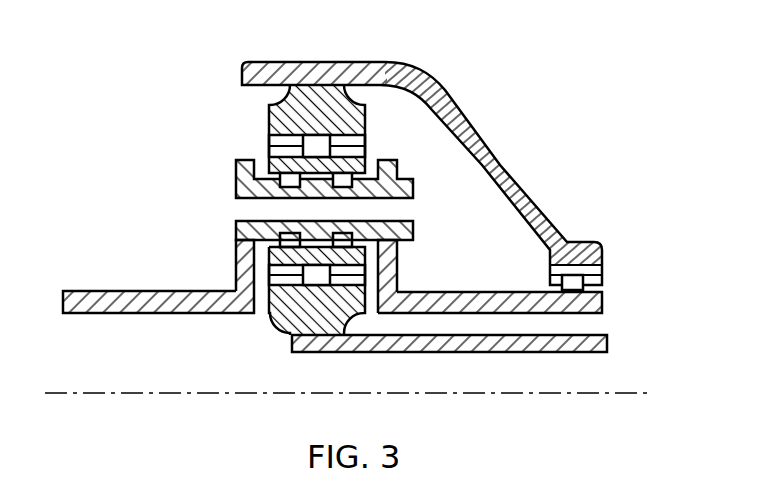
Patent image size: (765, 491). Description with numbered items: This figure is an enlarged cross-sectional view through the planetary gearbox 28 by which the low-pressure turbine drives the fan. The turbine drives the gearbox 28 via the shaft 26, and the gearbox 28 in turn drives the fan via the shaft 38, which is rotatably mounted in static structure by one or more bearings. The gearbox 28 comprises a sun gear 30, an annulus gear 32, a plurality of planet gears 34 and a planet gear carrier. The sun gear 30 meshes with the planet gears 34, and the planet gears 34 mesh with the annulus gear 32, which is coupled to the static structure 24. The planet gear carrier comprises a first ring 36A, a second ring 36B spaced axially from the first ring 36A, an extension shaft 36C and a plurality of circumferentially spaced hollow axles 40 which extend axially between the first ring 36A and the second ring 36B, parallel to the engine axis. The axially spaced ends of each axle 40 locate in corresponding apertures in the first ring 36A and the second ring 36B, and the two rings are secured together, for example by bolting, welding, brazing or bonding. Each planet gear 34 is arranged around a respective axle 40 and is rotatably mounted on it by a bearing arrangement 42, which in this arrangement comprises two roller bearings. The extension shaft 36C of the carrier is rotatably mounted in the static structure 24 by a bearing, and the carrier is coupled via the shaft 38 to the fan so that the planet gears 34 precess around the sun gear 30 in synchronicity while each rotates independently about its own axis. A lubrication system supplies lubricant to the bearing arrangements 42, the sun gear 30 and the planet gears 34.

The static structure 24 is at (352, 67).
The shaft 26 is at (442, 348).
The gearbox 28 is at (196, 368).
The sun gear 30 is at (285, 281).
The annulus gear 32 is at (282, 120).
The planet gears 34 is at (347, 165).
The first ring 36A is at (388, 268).
The second ring 36B is at (242, 275).
The extension shaft 36C is at (493, 295).
The shaft 38 is at (127, 307).
The axles 40 is at (238, 188).
The bearing arrangement 42 is at (335, 221).